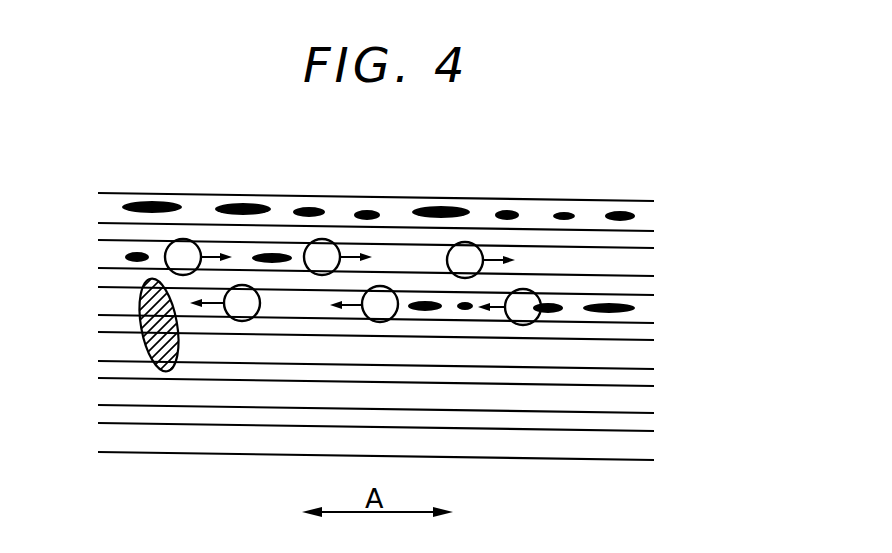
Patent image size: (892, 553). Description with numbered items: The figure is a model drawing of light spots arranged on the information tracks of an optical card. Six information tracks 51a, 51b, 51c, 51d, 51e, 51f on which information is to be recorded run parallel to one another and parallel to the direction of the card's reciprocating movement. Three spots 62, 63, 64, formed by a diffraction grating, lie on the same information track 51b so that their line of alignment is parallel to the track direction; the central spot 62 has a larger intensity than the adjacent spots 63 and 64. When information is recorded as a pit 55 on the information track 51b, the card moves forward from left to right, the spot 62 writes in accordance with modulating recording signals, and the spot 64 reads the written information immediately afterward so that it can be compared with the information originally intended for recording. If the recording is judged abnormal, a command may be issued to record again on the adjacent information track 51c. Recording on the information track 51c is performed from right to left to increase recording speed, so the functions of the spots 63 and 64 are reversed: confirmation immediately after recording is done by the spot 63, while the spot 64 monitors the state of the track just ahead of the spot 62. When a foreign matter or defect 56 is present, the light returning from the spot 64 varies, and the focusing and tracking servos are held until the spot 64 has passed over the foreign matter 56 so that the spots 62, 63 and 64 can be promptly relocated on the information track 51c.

The information track 51a is at (647, 218).
The information track 51b is at (647, 267).
The information track 51c is at (647, 313).
The information track 51d is at (647, 357).
The information track 51e is at (647, 402).
The information track 51f is at (647, 447).
The pit 55 is at (126, 256).
The foreign matter or defect 56 is at (138, 306).
The central spot 62 is at (386, 286).
The spot 63 is at (527, 289).
The spot 64 is at (236, 285).